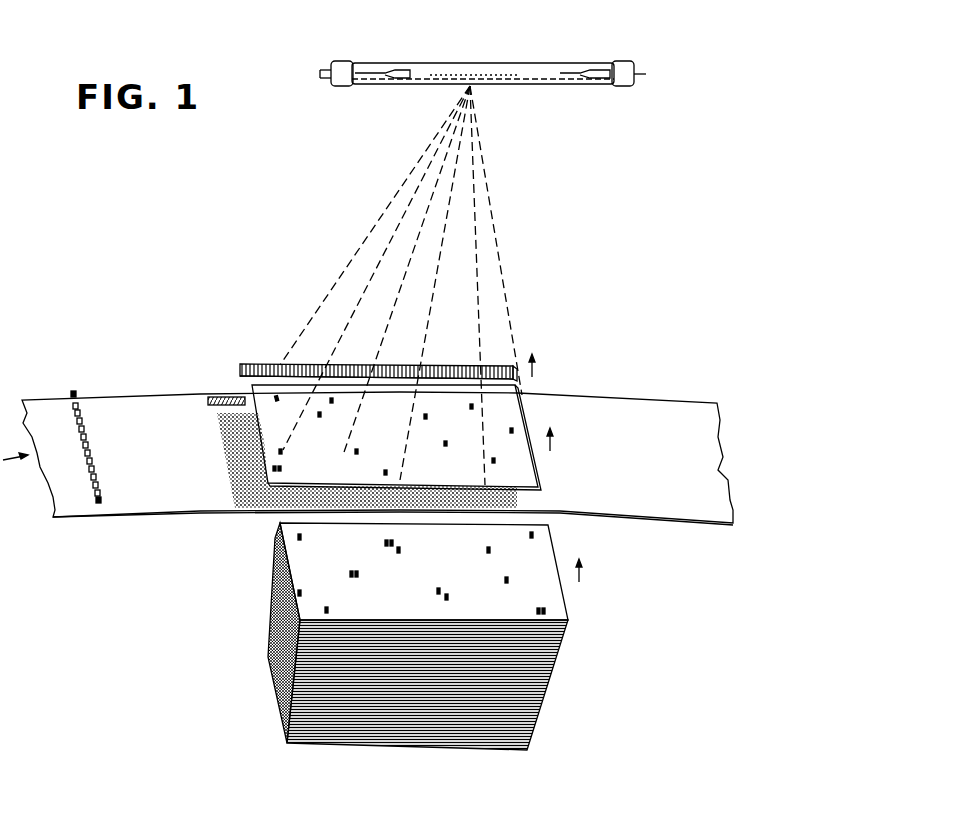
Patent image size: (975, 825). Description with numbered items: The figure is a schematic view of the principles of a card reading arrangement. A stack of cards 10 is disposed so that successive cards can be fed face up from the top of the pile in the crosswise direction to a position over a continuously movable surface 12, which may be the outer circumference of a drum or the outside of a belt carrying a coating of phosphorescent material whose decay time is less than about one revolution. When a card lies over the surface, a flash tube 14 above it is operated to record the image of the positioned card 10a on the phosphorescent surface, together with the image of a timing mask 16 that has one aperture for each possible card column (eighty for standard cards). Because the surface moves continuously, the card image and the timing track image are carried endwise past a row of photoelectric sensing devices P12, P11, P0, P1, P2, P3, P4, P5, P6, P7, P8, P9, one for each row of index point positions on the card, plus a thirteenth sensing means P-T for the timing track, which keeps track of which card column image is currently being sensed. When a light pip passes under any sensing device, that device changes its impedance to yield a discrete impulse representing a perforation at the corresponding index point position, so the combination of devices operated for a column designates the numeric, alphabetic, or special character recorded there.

The stack of cards 10 is at (240, 605).
The positioned card 10a is at (510, 412).
The continuously movable surface 12 is at (652, 404).
The flash tube 14 is at (563, 71).
The timing mask 16 is at (252, 365).
The thirteenth photoelectric sensing means P-T is at (76, 394).
The photoelectric sensing device P0 is at (77, 425).
The photoelectric sensing device P1 is at (84, 430).
The photoelectric sensing device P2 is at (82, 441).
The photoelectric sensing device P3 is at (88, 447).
The photoelectric sensing device P4 is at (85, 457).
The photoelectric sensing device P5 is at (92, 464).
The photoelectric sensing device P6 is at (89, 473).
The photoelectric sensing device P7 is at (96, 481).
The photoelectric sensing device P8 is at (94, 490).
The photoelectric sensing device P9 is at (100, 498).
The photoelectric sensing device P11 is at (80, 412).
The photoelectric sensing device P12 is at (74, 408).